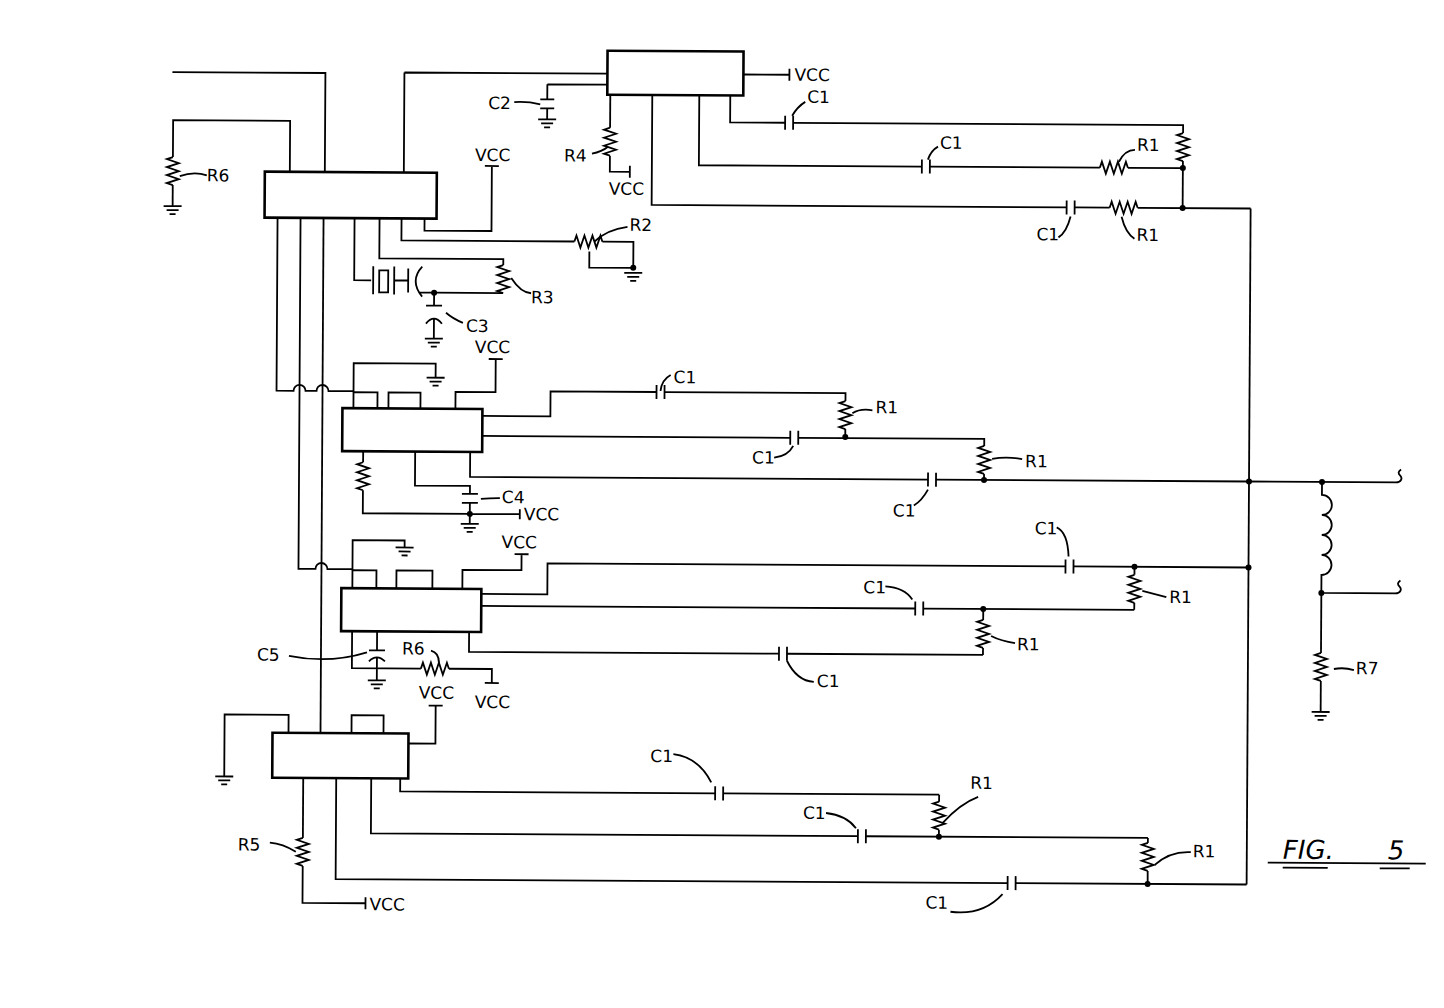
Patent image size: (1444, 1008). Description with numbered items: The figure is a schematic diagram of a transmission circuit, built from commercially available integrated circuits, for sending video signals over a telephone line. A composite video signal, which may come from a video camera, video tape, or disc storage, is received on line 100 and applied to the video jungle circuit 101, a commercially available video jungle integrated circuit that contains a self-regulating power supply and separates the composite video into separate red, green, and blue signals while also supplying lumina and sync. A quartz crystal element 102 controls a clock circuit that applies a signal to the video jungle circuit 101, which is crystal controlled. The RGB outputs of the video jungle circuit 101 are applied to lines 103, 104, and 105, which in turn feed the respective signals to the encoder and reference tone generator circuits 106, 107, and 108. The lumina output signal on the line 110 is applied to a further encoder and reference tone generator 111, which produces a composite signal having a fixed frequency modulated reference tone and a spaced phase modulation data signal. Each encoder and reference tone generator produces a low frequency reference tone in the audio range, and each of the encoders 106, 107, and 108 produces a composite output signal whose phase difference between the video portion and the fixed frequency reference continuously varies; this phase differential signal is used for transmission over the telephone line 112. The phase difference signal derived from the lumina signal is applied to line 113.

The line 100 is at (272, 73).
The video jungle circuit 101 is at (418, 172).
The quartz crystal element 102 is at (372, 295).
The line 103 is at (276, 284).
The line 104 is at (299, 312).
The line 105 is at (322, 366).
The encoder and reference tone generator circuit 106 is at (484, 405).
The encoder and reference tone generator circuit 107 is at (484, 627).
The encoder and reference tone generator circuit 108 is at (412, 775).
The line 110 is at (443, 72).
The encoder and reference tone generator 111 is at (741, 56).
The telephone line 112 is at (1376, 474).
The line 113 is at (1249, 317).